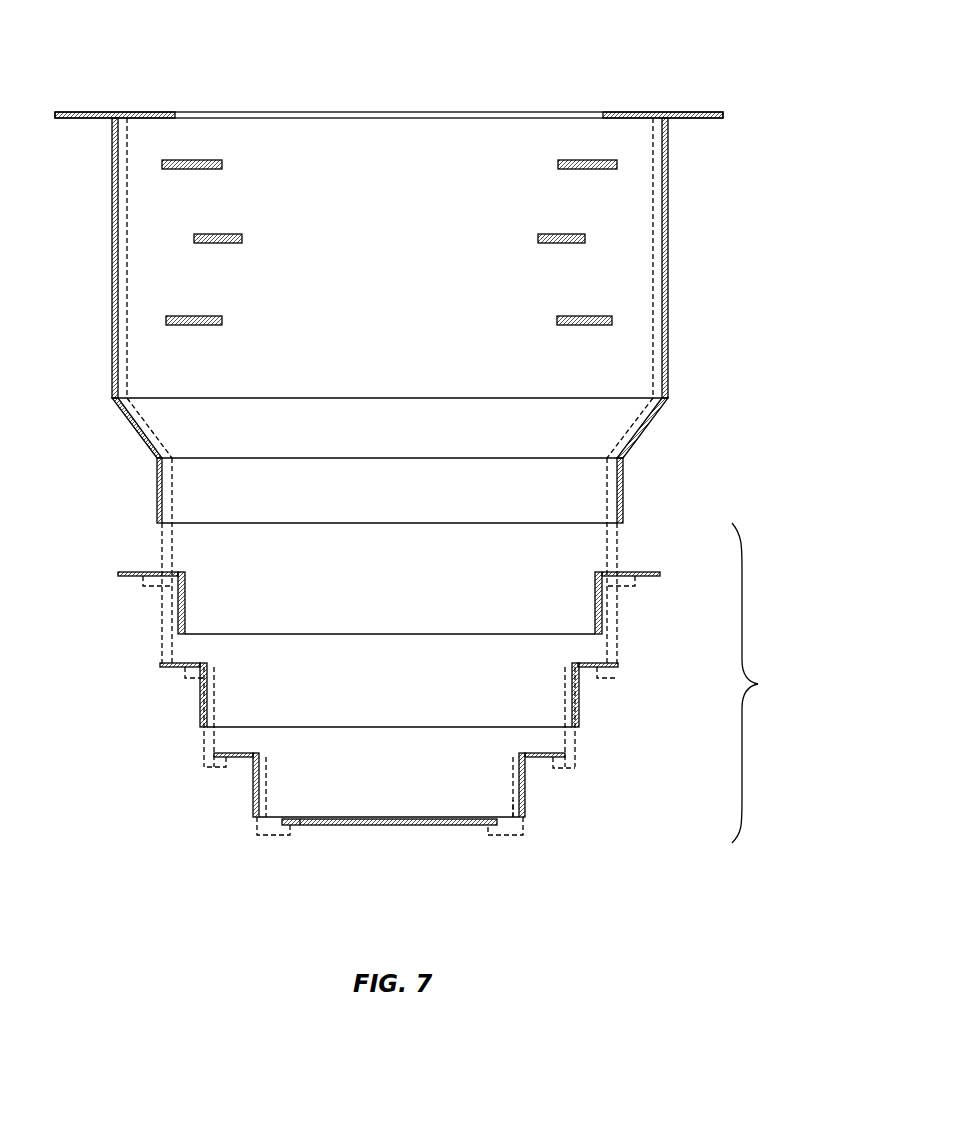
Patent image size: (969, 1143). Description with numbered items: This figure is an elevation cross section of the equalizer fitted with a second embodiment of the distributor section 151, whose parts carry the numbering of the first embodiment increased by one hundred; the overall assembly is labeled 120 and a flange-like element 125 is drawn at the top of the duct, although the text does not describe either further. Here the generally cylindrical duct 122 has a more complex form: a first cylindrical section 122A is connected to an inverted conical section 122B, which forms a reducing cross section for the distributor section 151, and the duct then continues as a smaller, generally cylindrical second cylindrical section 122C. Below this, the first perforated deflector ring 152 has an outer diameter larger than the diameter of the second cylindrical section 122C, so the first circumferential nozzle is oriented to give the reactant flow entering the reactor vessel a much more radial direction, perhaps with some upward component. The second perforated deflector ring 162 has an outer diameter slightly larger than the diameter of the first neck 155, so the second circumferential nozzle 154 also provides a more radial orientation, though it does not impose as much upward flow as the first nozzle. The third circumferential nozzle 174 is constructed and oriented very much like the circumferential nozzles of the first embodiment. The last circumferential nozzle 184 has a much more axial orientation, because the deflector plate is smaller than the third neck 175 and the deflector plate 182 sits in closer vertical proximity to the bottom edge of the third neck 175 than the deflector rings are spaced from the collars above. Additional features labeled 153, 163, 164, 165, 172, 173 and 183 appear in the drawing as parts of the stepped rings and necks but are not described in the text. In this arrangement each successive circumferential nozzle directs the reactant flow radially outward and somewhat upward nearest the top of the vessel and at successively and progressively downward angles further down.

The nozzle assembly 120 is at (108, 48).
The generally cylindrical duct 122 is at (433, 391).
The first cylindrical section 122A is at (668, 383).
The inverted conical section 122B is at (628, 432).
The second cylindrical section 122C is at (623, 508).
The top flange 125 is at (712, 112).
The distributor section 151 is at (432, 692).
The first perforated deflector ring 152 is at (400, 591).
The first segment flange 153 is at (140, 572).
The second circumferential nozzle 154 is at (647, 558).
The first neck 155 is at (603, 610).
The second perforated deflector ring 162 is at (409, 703).
The second segment flange 163 is at (173, 661).
The second segment retaining bracket 164 is at (622, 648).
The second segment wall 165 is at (580, 697).
The third extension segment 172 is at (409, 770).
The third segment flange 173 is at (226, 753).
The third circumferential nozzle 174 is at (582, 742).
The third neck 175 is at (526, 790).
The deflector plate 182 is at (420, 827).
The bottom plate edge 183 is at (300, 819).
The last circumferential nozzle 184 is at (510, 800).